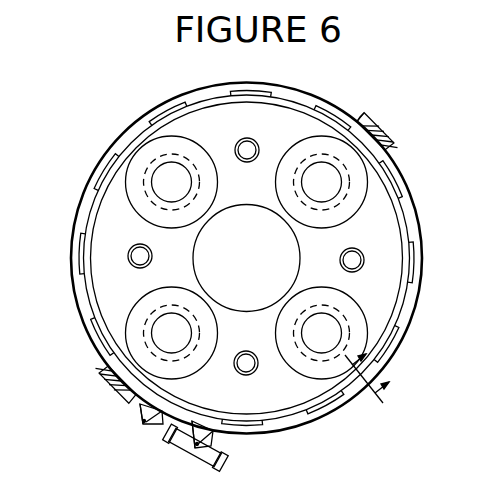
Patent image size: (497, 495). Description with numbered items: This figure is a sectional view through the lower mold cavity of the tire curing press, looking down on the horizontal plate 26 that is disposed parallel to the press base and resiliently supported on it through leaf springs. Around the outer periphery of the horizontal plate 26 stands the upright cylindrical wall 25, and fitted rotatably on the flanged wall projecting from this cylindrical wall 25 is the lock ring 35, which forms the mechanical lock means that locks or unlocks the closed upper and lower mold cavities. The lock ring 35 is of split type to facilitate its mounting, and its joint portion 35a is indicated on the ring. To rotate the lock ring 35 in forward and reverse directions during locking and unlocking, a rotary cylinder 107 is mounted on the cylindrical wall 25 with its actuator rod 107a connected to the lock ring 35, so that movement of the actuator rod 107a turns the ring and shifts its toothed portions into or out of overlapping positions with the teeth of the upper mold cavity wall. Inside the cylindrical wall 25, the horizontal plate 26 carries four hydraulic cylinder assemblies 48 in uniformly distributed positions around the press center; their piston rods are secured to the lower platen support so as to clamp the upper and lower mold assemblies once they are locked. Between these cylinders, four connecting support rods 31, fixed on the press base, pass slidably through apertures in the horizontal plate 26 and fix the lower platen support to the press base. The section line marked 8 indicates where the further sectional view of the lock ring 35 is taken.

The cylindrical wall 25 is at (127, 148).
The horizontal plate 26 is at (380, 282).
The connecting support rods 31 is at (357, 251).
The lock ring 35 is at (376, 148).
The joint portion 35a is at (366, 110).
The hydraulic cylinder assemblies 48 is at (367, 185).
The rotary cylinder 107 is at (232, 442).
The actuator rod 107a is at (157, 437).
The section line 8- 8 is at (351, 384).